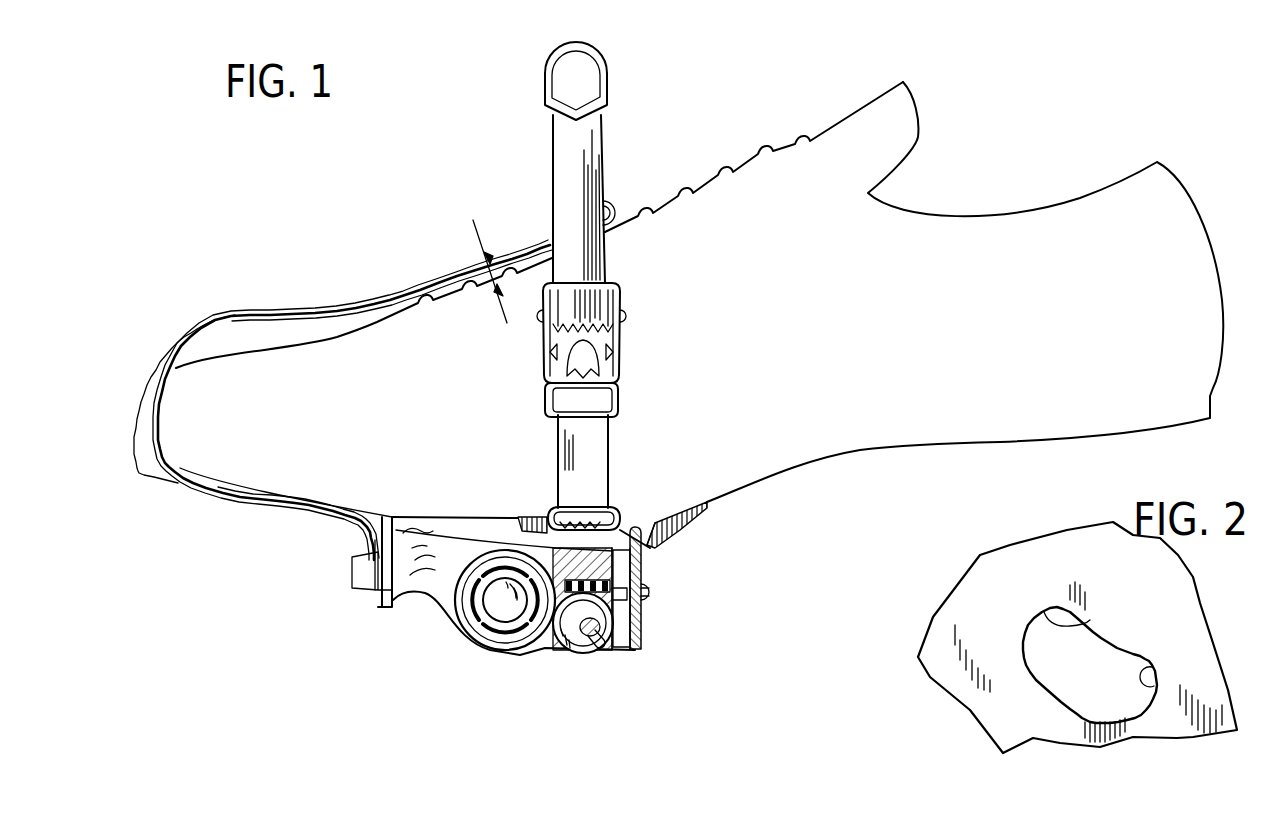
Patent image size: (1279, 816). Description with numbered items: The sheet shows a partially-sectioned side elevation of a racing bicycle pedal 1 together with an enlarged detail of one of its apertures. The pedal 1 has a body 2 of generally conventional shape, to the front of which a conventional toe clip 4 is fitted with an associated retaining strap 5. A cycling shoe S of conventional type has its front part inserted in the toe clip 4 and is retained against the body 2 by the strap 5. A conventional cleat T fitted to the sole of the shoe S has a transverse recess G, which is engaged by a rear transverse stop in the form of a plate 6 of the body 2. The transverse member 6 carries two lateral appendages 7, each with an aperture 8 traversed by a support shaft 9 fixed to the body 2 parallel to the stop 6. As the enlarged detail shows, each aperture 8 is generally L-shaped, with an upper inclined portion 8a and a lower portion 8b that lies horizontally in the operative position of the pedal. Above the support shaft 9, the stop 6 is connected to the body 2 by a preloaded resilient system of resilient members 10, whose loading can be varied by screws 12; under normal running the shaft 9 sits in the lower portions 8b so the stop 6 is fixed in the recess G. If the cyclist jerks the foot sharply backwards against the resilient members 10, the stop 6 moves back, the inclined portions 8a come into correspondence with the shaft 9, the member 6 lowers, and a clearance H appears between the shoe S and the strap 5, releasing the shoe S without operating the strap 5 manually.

In FIG. 1, the bicycle pedal 1 is at (442, 636).
In FIG. 1, the body 2 is at (386, 607).
In FIG. 1, the toe clip 4 is at (380, 293).
In FIG. 1, the retaining strap 5 is at (610, 253).
In FIG. 1, the transverse stop plate 6 is at (643, 565).
In FIG. 1, the lateral appendage 7 is at (617, 645).
In FIG. 2, the lateral appendage 7 is at (1005, 577).
In FIG. 1, the aperture 8 is at (602, 645).
In FIG. 2, the aperture 8 is at (1047, 596).
In FIG. 2, the upper inclined portion 8a is at (1090, 621).
In FIG. 2, the lower portion 8b is at (1140, 688).
In FIG. 1, the support shaft 9 is at (577, 645).
In FIG. 1, the resilient member 10 is at (587, 568).
In FIG. 1, the screw 12 is at (655, 598).
In FIG. 1, the cycling shoe S is at (757, 158).
In FIG. 1, the cleat T is at (707, 505).
In FIG. 1, the clearance H is at (478, 275).
In FIG. 1, the transverse recess G is at (653, 517).